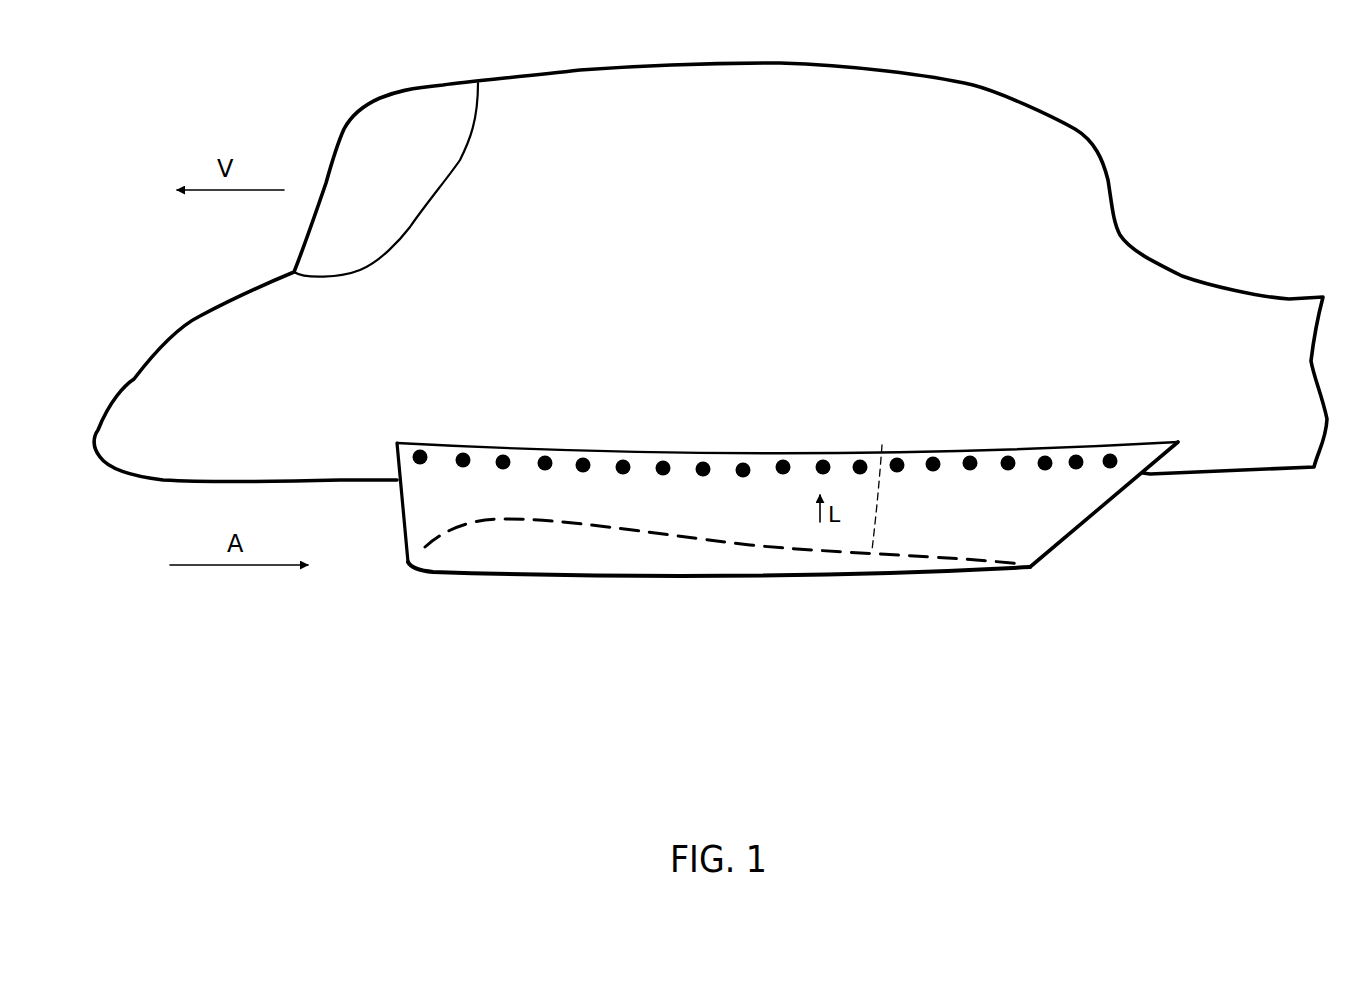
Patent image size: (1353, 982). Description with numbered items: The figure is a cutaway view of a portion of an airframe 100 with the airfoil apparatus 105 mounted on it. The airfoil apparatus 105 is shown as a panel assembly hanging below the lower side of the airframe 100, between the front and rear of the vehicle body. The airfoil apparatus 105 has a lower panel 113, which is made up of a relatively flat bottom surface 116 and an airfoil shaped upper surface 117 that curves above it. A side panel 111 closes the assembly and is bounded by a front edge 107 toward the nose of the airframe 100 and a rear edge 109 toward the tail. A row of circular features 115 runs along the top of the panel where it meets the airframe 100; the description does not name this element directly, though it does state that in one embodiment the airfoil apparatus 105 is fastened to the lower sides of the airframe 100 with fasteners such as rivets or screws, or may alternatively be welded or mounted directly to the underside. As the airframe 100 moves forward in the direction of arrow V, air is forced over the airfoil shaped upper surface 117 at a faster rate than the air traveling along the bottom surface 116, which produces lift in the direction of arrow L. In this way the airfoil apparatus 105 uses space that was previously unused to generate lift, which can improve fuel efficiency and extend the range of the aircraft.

The airframe 100 is at (1138, 204).
The airfoil apparatus 105 is at (580, 441).
The front edge 107 is at (407, 532).
The rear edge 109 is at (1083, 527).
The side panel 111 is at (995, 531).
The lower panel 113 is at (600, 563).
The air jet nozzles 115 is at (422, 448).
The bottom surface 116 is at (730, 580).
The airfoil shaped upper surface 117 is at (882, 445).